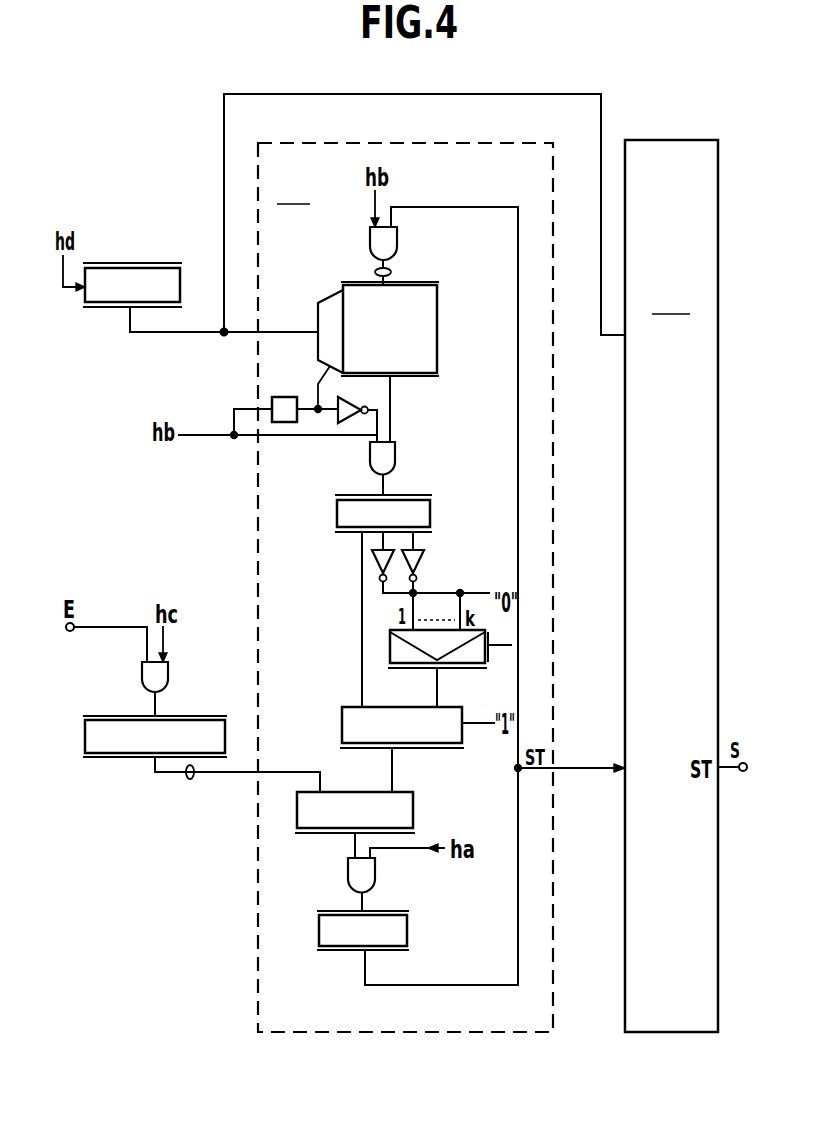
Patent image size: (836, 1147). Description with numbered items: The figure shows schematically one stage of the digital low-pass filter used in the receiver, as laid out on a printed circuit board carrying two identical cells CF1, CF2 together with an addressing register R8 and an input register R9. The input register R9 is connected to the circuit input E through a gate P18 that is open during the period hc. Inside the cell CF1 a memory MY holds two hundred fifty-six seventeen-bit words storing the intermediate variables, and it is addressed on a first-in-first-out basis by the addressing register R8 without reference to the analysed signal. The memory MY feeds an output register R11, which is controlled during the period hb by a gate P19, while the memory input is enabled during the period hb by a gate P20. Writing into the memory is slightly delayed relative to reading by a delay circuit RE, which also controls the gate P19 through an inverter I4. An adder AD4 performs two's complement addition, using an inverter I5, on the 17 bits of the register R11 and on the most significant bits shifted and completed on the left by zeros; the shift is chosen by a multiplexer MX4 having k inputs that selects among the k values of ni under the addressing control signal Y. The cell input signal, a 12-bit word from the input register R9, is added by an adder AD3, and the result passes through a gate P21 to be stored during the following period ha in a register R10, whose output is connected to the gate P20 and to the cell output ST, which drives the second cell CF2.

The cell CF1 is at (302, 160).
The cell CF2 is at (688, 156).
The addressing register R8 is at (121, 282).
The input register R9 is at (135, 745).
The register R10 is at (400, 937).
The output register R11 is at (420, 516).
The gate P18 is at (150, 678).
The gate P19 is at (392, 463).
The gate P20 is at (390, 252).
The gate P21 is at (355, 866).
The inverter I4 is at (358, 398).
The inverter I5 is at (420, 563).
The memory MY is at (430, 312).
The multiplexer MX4 is at (467, 653).
The adder AD3 is at (412, 812).
The adder AD4 is at (360, 722).
The delay circuit RE is at (283, 400).
The seventeen-bit word width 17 is at (374, 273).
The 12-bit bus 12 is at (191, 785).